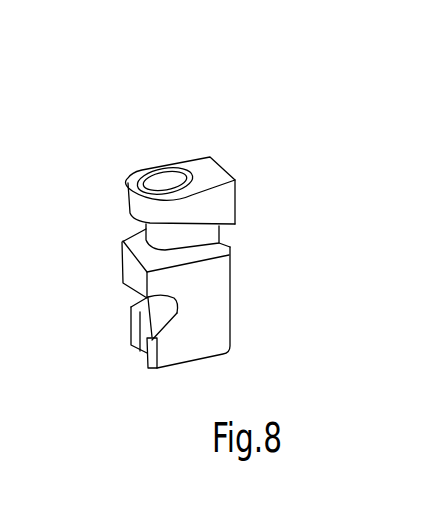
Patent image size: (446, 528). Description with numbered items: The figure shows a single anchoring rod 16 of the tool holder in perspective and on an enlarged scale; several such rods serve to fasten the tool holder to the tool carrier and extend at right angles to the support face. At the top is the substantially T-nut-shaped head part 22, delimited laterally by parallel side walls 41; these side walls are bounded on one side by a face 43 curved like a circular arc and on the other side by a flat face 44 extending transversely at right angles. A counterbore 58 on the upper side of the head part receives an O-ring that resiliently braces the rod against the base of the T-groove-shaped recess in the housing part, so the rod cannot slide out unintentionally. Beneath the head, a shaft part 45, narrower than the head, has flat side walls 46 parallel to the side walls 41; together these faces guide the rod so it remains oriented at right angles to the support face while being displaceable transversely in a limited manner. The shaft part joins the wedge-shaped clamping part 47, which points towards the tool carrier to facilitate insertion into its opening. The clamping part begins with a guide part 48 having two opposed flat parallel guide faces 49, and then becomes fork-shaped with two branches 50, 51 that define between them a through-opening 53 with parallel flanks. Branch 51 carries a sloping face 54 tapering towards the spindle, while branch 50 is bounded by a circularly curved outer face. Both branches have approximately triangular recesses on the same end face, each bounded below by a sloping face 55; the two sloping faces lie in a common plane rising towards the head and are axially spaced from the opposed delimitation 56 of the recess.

The anchoring rod 16 is at (245, 145).
The head 22 is at (237, 188).
The side walls of the head part 41 is at (175, 163).
The curved face 43 is at (138, 200).
The flat face 44 is at (213, 170).
The shaft part 45 is at (232, 235).
The flat side walls of the shaft part 46 is at (120, 248).
The clamping part 47 is at (233, 330).
The guide part 48 is at (163, 282).
The guide faces 49 is at (178, 306).
The branch 50 is at (138, 356).
The branch 51 is at (164, 350).
The through-opening 53 is at (147, 364).
The sloping face 54 is at (202, 342).
The sloping face 55 is at (131, 320).
The opposed delimitation of the recess 56 is at (150, 292).
The counterbore 58 is at (157, 183).